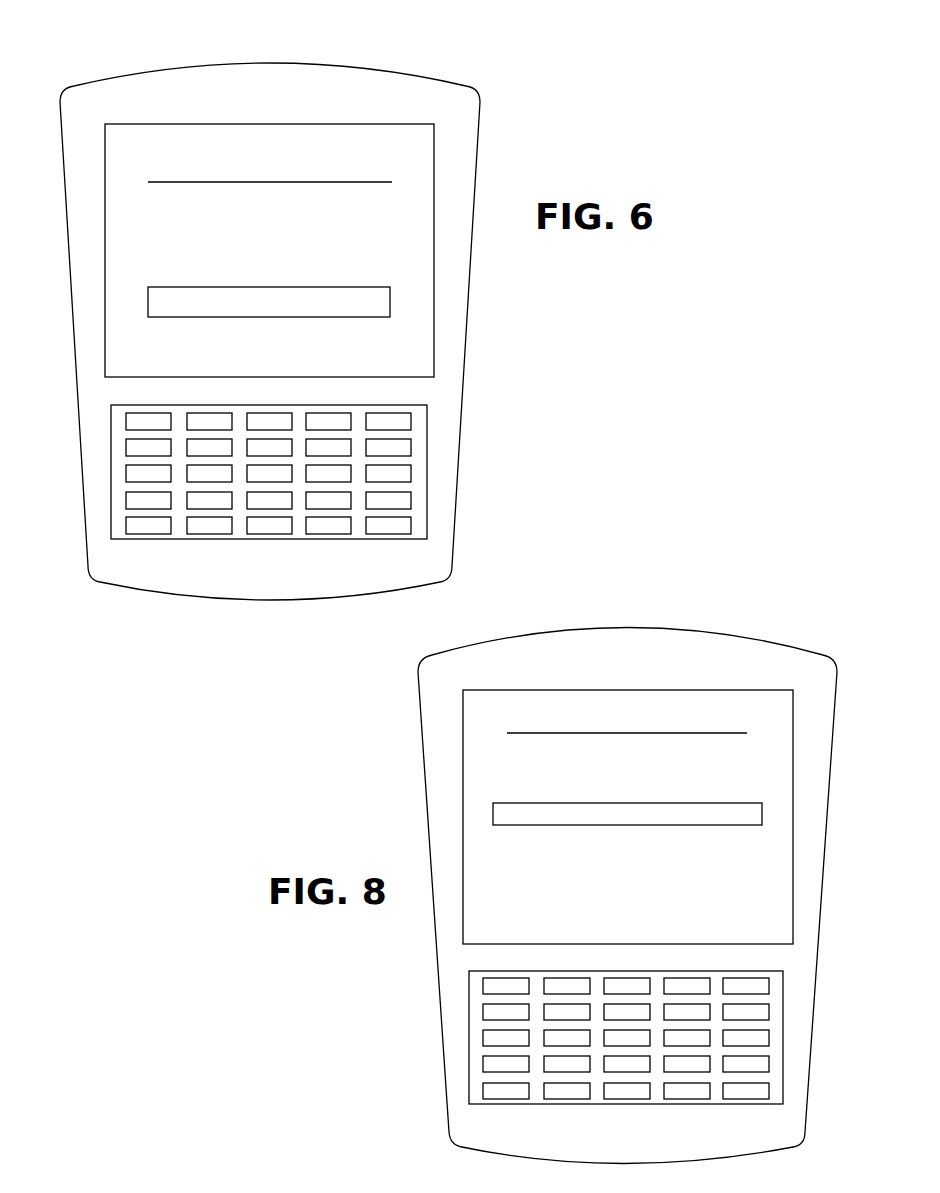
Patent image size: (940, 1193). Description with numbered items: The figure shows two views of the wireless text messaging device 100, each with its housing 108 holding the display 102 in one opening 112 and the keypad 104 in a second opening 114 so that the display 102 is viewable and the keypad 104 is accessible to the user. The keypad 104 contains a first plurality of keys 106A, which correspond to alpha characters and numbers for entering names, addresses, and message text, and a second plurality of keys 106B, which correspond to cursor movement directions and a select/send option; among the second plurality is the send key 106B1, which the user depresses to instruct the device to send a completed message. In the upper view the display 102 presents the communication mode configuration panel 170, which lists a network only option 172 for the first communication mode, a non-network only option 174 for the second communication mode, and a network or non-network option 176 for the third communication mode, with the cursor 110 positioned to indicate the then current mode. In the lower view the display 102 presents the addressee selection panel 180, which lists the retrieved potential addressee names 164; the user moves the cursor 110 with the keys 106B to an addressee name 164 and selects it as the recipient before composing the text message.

In FIG. 6, the wireless text messaging device 100 is at (493, 57).
In FIG. 8, the wireless text messaging device 100 is at (686, 598).
In FIG. 6, the housing 108 is at (193, 78).
In FIG. 8, the housing 108 is at (635, 645).
In FIG. 6, the display 102 is at (405, 138).
In FIG. 8, the display 102 is at (492, 719).
In FIG. 6, the communication mode configuration panel 170 is at (364, 233).
In FIG. 6, the network only option 172 is at (300, 208).
In FIG. 6, the non-network only option 174 is at (338, 250).
In FIG. 6, the network or non-network option 176 is at (402, 288).
In FIG. 6, the cursor 110 is at (390, 305).
In FIG. 8, the cursor 110 is at (493, 812).
In FIG. 6, the opening 112 is at (437, 357).
In FIG. 8, the opening 112 is at (705, 688).
In FIG. 6, the opening 114 is at (430, 445).
In FIG. 8, the opening 114 is at (467, 975).
In FIG. 6, the keypad 104 is at (418, 515).
In FIG. 8, the keypad 104 is at (475, 1003).
In FIG. 6, the first plurality of keys 106A is at (387, 498).
In FIG. 8, the first plurality of keys 106A is at (567, 1037).
In FIG. 6, the second plurality of keys 106B is at (390, 523).
In FIG. 8, the second plurality of keys 106B is at (505, 1088).
In FIG. 6, the send key 106B1 is at (269, 523).
In FIG. 8, the send key 106B1 is at (625, 1092).
In FIG. 8, the addressee selection panel 180 is at (540, 810).
In FIG. 8, the addressee name 164 is at (492, 759).